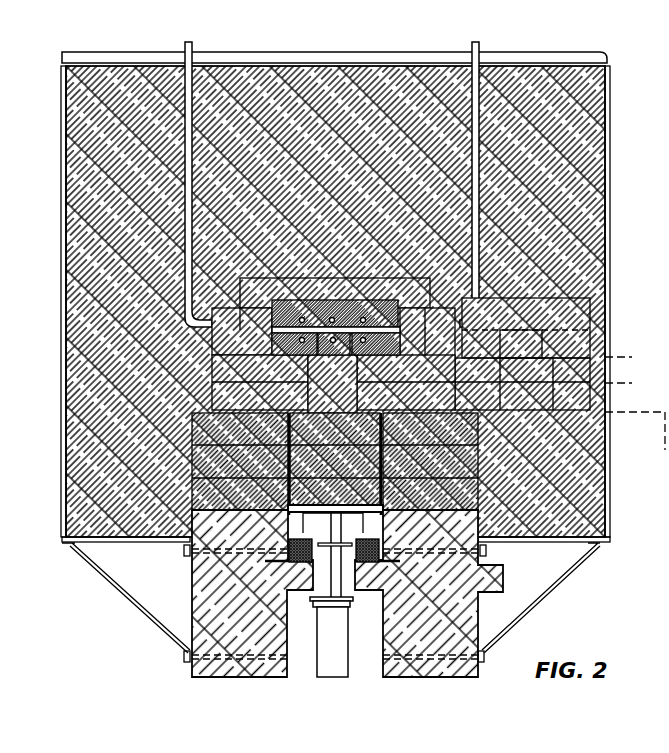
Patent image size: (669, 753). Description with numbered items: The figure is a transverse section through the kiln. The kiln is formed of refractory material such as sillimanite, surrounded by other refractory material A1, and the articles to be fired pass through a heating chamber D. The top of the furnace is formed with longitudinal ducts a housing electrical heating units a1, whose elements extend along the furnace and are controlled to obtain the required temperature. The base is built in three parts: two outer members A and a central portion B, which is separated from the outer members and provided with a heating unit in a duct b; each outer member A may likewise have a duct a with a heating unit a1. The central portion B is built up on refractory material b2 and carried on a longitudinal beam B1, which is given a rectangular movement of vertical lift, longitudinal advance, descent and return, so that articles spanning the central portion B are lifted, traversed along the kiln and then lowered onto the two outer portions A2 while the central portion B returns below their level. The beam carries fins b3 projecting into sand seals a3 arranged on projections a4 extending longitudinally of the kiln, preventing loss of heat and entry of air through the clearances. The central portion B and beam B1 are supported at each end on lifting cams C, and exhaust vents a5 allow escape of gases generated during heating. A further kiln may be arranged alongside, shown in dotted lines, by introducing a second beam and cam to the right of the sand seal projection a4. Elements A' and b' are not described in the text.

The exhaust vents a5 is at (190, 45).
The refractory material A1 is at (324, 165).
The heating chamber D is at (300, 316).
The longitudinal duct a is at (363, 317).
The electrical heating unit a1 is at (338, 330).
The duct b is at (336, 324).
The outer portions A2 is at (333, 384).
The outer member A is at (240, 461).
The central portion B is at (333, 469).
The block A' is at (430, 461).
The refractory material b2 is at (338, 503).
The longitudinal beam B1 is at (362, 517).
The fins b3 is at (298, 546).
The stem b' is at (333, 557).
The sand seals a3 is at (298, 560).
The projections a4 is at (308, 588).
The lifting cams C is at (338, 645).